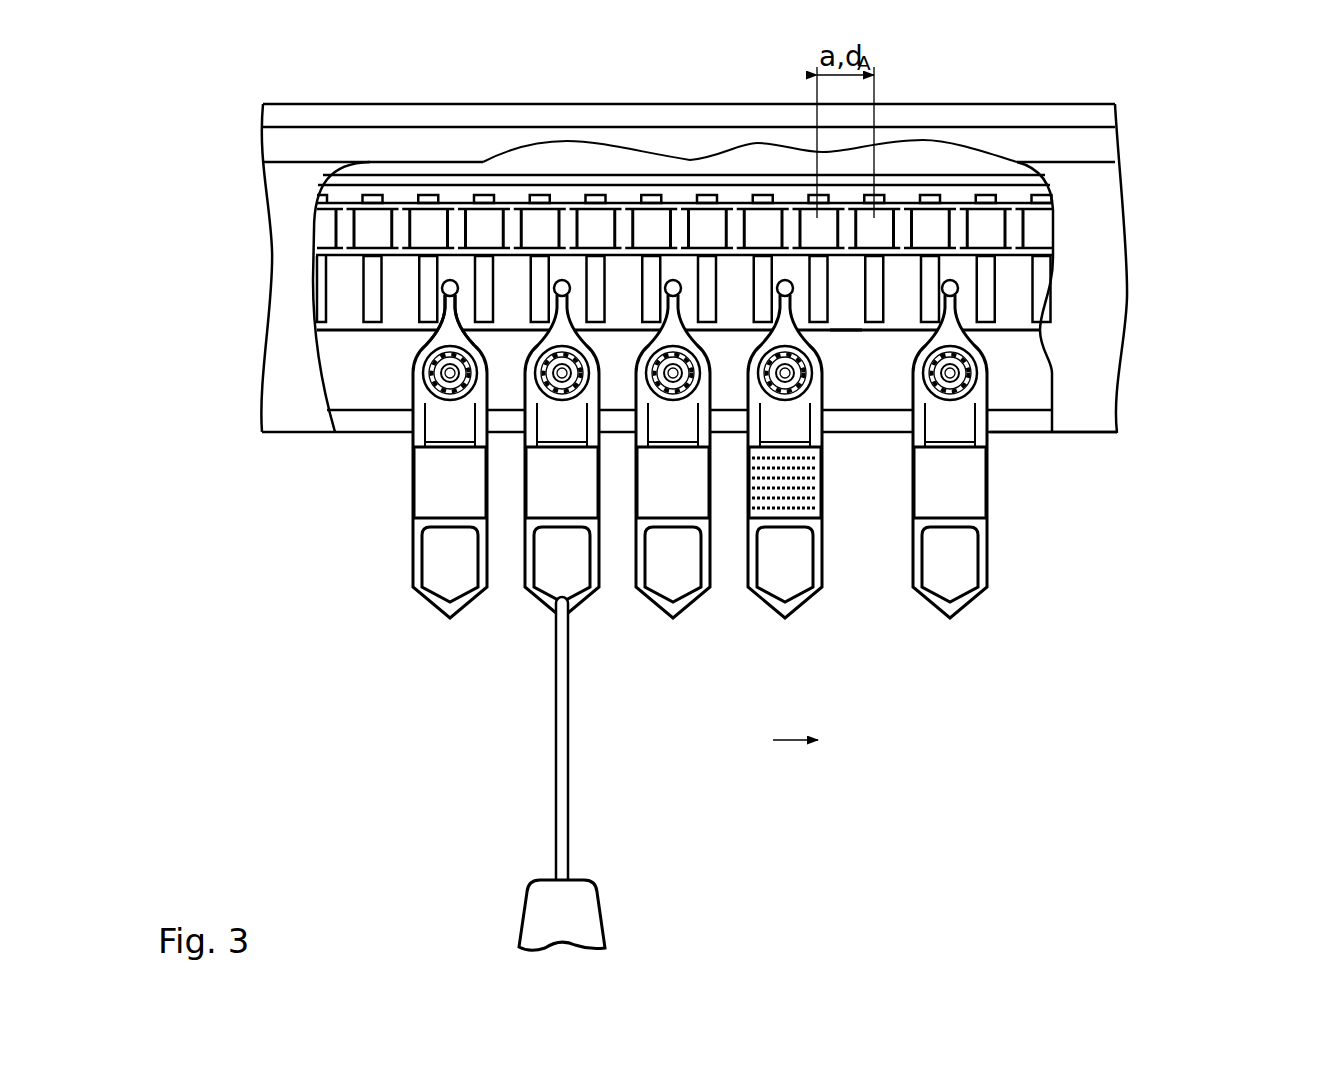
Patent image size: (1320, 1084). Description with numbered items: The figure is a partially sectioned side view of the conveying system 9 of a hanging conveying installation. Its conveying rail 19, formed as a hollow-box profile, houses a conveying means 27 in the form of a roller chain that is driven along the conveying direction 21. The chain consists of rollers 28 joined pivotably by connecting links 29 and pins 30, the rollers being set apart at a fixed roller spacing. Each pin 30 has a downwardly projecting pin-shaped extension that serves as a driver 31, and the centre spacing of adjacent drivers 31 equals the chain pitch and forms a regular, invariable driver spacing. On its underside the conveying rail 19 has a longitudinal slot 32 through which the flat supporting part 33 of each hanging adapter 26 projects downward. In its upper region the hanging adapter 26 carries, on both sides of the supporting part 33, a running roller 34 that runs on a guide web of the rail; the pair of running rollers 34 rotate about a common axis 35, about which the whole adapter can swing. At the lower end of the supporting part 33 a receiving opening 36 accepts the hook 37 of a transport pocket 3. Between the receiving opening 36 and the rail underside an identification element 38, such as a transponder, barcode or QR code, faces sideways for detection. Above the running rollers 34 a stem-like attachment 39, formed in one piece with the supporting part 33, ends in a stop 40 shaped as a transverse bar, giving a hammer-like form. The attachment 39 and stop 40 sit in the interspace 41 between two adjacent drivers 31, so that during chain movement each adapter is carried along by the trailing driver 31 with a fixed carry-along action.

The transport pocket 3 is at (608, 917).
The conveying system 9 is at (1160, 265).
The conveying rail 19 is at (275, 436).
The conveying direction 21 is at (798, 740).
The hanging adapter 26 is at (412, 496).
The conveying means 27 is at (316, 235).
The roller 28 is at (482, 222).
The connecting link 29 is at (388, 201).
The pin 30 is at (541, 195).
The driver 31 is at (370, 287).
The longitudinal slot 32 is at (1011, 436).
The supporting part 33 is at (490, 495).
The running roller 34 is at (413, 362).
The axis 35 is at (981, 373).
The receiving opening 36 is at (434, 567).
The hook 37 is at (564, 790).
The identification element 38 is at (822, 489).
The attachment 39 is at (441, 304).
The stop 40 is at (449, 288).
The interspace 41 is at (848, 292).